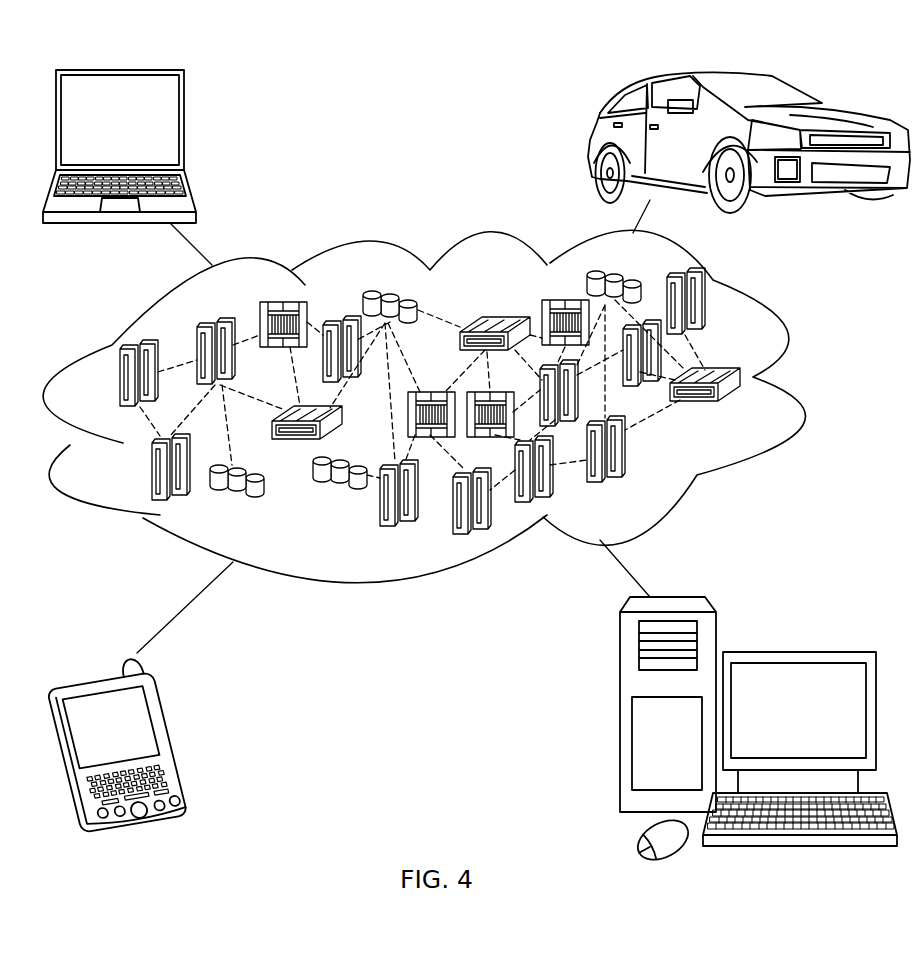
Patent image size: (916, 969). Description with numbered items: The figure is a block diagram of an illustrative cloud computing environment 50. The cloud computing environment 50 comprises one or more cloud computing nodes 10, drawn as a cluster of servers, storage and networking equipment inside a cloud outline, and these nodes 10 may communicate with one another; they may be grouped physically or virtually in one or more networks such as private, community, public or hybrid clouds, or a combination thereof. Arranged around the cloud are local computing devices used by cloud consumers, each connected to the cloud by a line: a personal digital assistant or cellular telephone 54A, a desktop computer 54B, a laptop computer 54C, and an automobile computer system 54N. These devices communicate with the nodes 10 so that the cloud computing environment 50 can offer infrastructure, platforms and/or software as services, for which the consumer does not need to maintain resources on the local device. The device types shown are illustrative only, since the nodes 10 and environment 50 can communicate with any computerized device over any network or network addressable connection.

The cloud computing node 10 is at (743, 411).
The cloud computing environment 50 is at (800, 383).
The personal digital assistant or cellular telephone 54A is at (173, 737).
The desktop computer 54B is at (793, 650).
The laptop computer 54C is at (185, 128).
The automobile computer system 54N is at (592, 140).